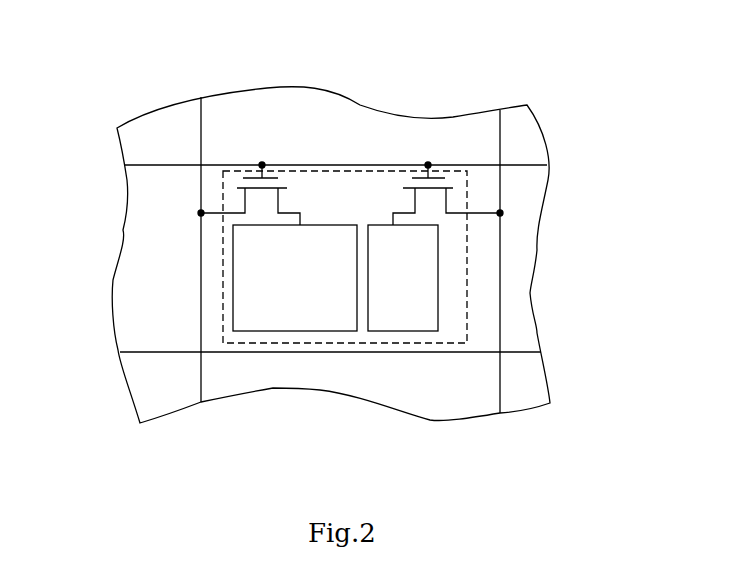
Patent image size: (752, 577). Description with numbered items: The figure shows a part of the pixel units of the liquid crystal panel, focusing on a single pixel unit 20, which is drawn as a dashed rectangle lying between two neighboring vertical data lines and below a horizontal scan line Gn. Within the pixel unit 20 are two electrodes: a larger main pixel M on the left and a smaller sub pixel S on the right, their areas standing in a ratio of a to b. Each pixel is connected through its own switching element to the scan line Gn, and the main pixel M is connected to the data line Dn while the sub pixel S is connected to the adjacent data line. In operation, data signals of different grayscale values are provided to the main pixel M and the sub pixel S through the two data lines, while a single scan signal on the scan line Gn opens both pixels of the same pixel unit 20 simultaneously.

The data line Dn is at (200, 135).
The scan line Gn is at (155, 167).
The pixel unit 20 is at (368, 170).
The main pixel M is at (295, 305).
The sub pixel S is at (407, 315).